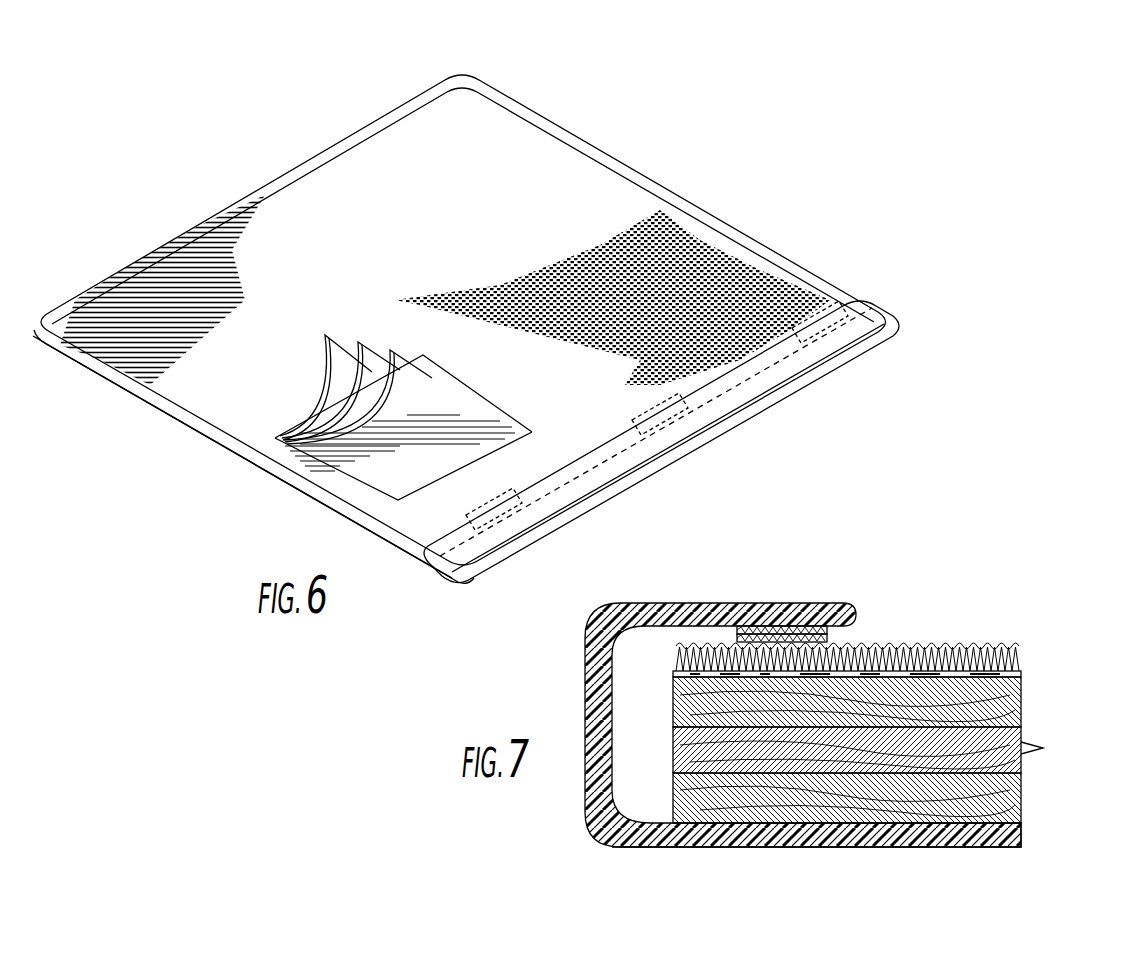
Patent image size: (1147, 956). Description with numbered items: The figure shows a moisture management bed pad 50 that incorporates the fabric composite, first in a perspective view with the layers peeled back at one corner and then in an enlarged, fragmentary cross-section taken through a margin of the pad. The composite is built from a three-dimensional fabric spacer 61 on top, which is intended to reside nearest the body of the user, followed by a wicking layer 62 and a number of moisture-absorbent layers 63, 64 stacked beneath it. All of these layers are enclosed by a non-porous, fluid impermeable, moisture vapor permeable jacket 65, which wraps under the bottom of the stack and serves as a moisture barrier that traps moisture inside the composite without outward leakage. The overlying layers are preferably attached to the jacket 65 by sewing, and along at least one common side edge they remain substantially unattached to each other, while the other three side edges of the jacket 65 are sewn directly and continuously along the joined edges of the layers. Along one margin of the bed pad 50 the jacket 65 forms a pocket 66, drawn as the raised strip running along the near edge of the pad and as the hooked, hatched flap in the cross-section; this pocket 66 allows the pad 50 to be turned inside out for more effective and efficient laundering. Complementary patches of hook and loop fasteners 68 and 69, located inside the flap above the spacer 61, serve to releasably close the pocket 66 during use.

In FIG. 6, the moisture management bed pad 50 is at (273, 158).
In FIG. 6, the three-dimensional fabric spacer 61 is at (322, 345).
In FIG. 7, the three-dimensional fabric spacer 61 is at (1021, 660).
In FIG. 6, the wicking layer 62 is at (355, 348).
In FIG. 7, the wicking layer 62 is at (1021, 703).
In FIG. 6, the moisture-absorbent layer 63 is at (420, 352).
In FIG. 7, the moisture-absorbent layer 63 is at (1021, 768).
In FIG. 6, the moisture-absorbent layer 64 is at (445, 388).
In FIG. 7, the moisture-absorbent layer 64 is at (1021, 811).
In FIG. 6, the jacket 65 is at (434, 463).
In FIG. 7, the jacket 65 is at (988, 848).
In FIG. 6, the pocket 66 is at (601, 438).
In FIG. 7, the pocket 66 is at (849, 631).
In FIG. 7, the hook fastener 68 is at (813, 627).
In FIG. 7, the loop fastener 69 is at (732, 640).